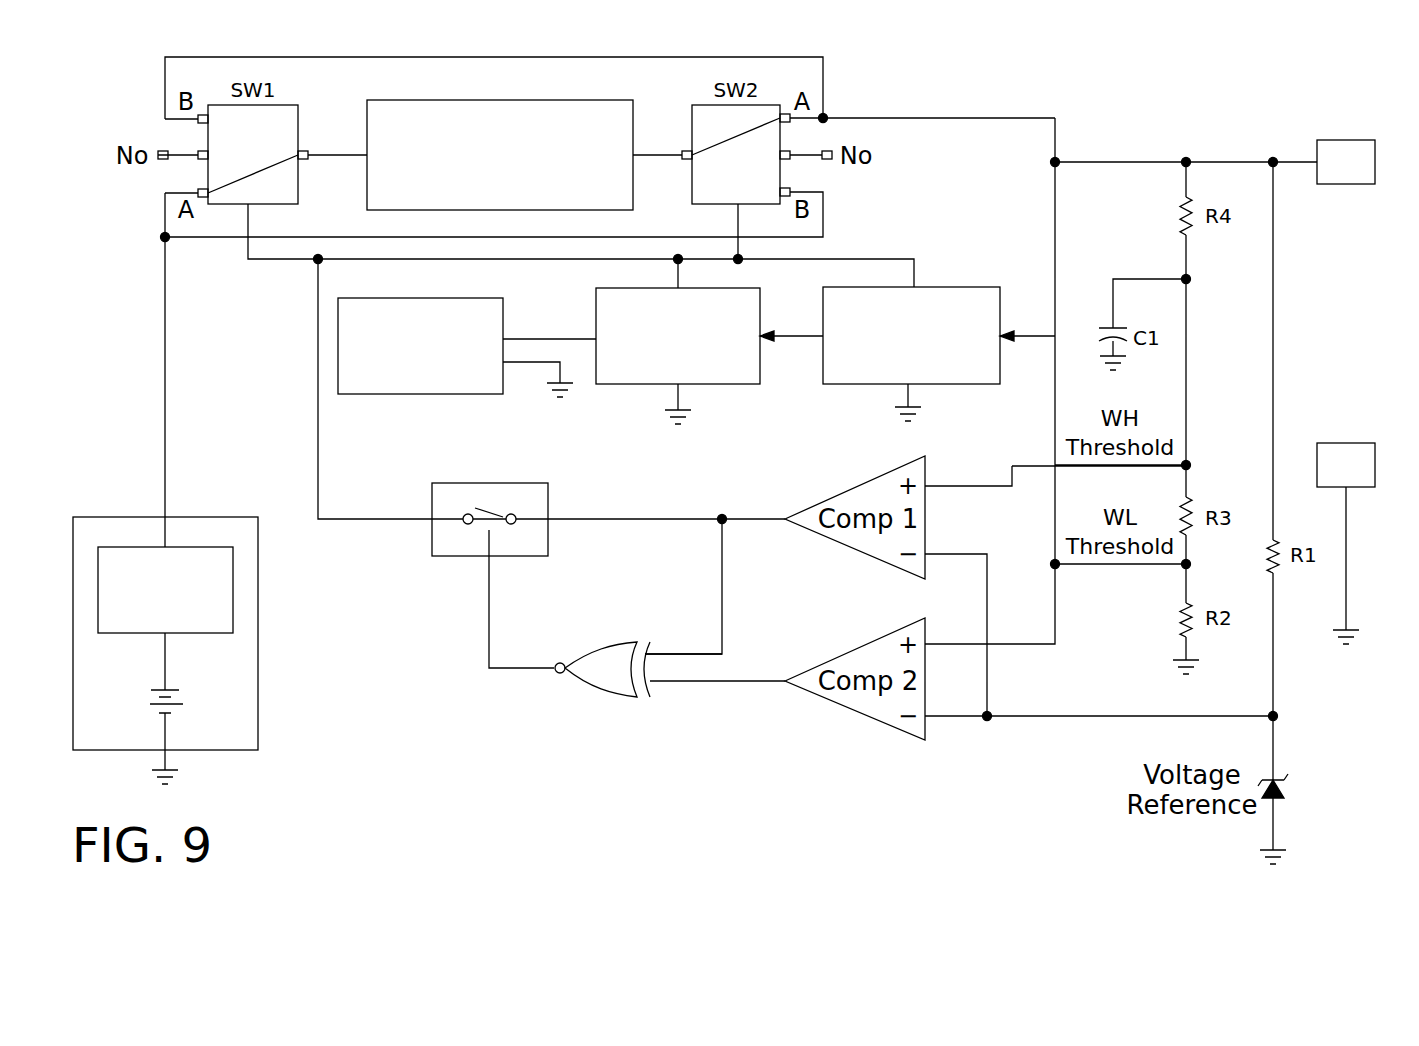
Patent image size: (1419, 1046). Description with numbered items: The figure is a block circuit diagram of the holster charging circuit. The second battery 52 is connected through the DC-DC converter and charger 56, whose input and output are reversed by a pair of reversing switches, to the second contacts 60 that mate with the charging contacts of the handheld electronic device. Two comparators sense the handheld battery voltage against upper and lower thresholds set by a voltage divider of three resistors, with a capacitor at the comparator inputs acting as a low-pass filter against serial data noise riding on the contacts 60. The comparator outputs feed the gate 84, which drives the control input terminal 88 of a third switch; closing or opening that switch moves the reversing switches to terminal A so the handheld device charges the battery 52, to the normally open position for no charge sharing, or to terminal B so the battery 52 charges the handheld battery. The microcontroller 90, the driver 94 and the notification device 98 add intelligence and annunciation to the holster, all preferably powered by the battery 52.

The second battery 52 is at (205, 517).
The second charging apparatus 56 is at (521, 100).
The second contacts 60 is at (1335, 140).
The gate 84 is at (604, 642).
The control input terminal of switch SW3 88 is at (509, 483).
The microcontroller 90 is at (937, 287).
The driver 94 is at (728, 384).
The notification device 98 is at (505, 318).